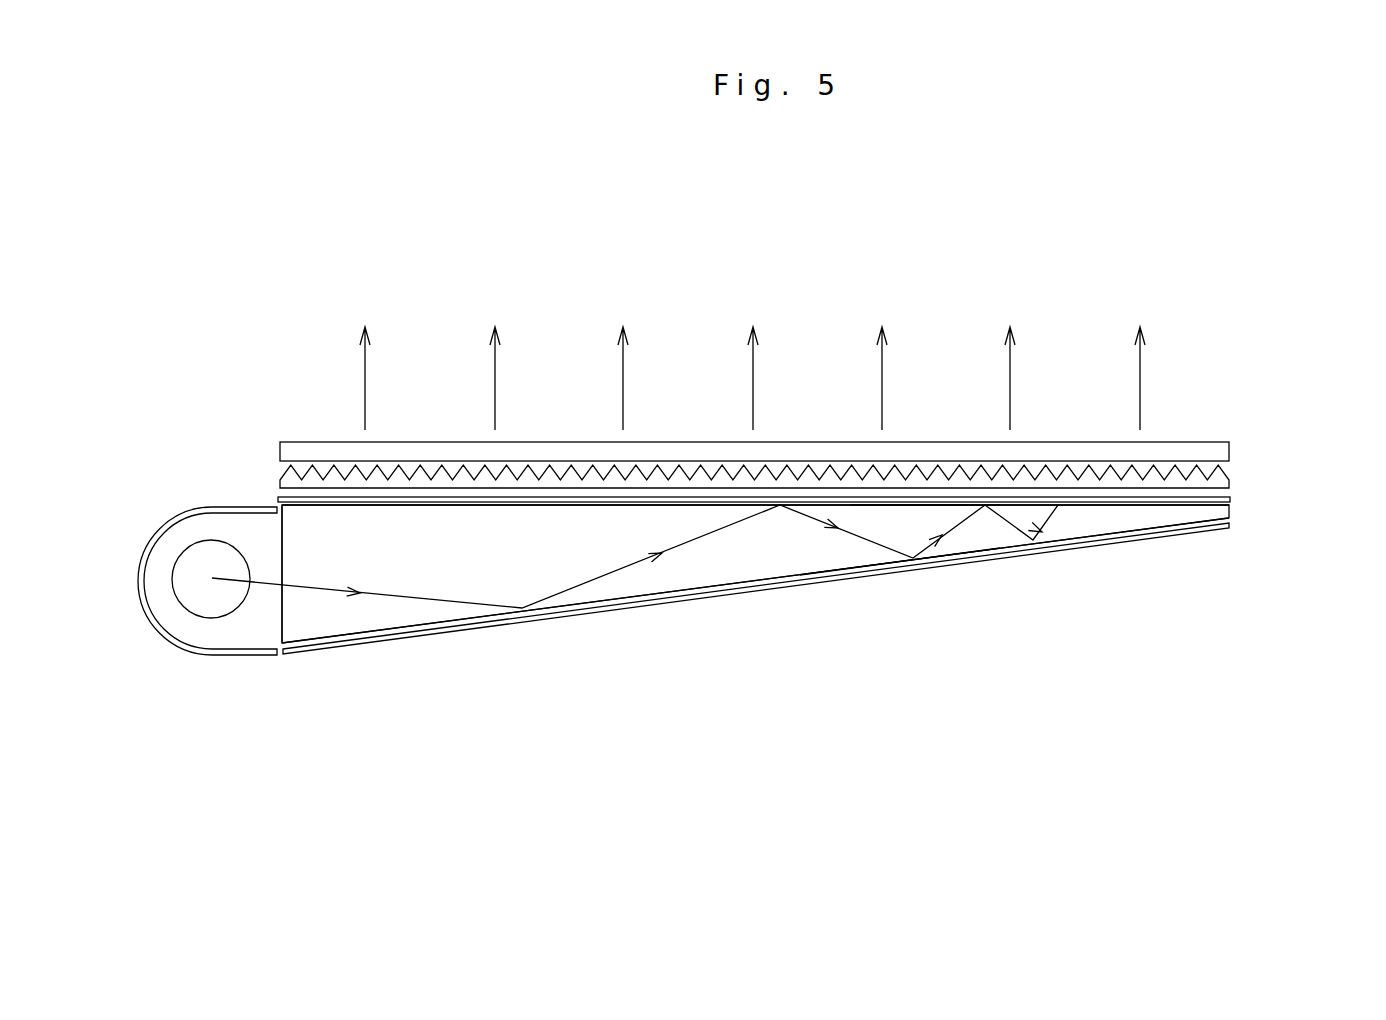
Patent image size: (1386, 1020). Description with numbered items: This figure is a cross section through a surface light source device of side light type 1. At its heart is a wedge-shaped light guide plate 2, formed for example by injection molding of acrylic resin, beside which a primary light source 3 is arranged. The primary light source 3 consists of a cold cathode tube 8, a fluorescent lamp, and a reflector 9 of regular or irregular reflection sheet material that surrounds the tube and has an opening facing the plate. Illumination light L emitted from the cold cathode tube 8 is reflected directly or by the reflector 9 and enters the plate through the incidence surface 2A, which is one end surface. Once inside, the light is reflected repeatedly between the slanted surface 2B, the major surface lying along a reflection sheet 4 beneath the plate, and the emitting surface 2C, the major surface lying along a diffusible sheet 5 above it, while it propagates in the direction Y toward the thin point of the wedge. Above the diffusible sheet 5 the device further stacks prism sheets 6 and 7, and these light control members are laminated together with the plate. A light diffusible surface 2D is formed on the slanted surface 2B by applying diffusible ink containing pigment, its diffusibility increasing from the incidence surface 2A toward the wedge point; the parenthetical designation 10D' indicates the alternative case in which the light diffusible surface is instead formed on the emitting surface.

The surface light source device of side light type 1 is at (982, 705).
The light guide plate 2 is at (722, 570).
The incidence surface 2A is at (283, 575).
The slanted surface 2B is at (540, 610).
The emitting surface 2C is at (532, 505).
The light diffusible surface 2D is at (887, 568).
The light diffusible surface on emitting surface 10D' is at (925, 433).
The primary light source 3 is at (130, 493).
The reflection sheet 4 is at (820, 585).
The diffusible sheet 5 is at (1230, 500).
The prism sheet 6 is at (1222, 478).
The prism sheet 7 is at (1220, 452).
The cold cathode tube 8 is at (223, 607).
The reflector 9 is at (155, 627).
The illumination light L is at (422, 602).
The direction along the light guide plate Y is at (296, 360).